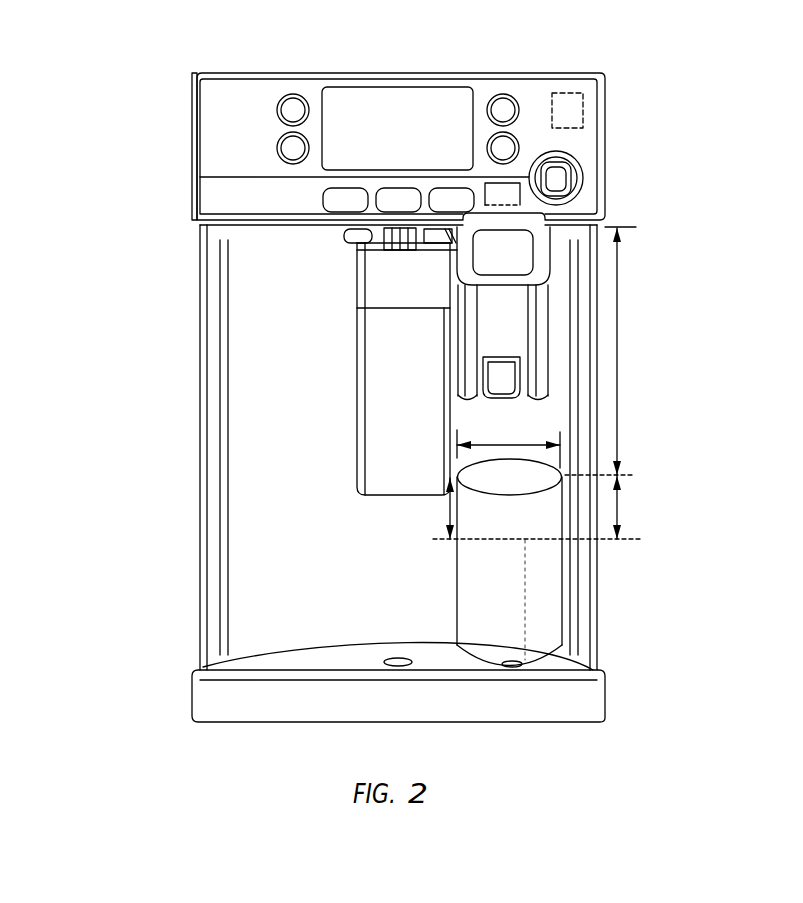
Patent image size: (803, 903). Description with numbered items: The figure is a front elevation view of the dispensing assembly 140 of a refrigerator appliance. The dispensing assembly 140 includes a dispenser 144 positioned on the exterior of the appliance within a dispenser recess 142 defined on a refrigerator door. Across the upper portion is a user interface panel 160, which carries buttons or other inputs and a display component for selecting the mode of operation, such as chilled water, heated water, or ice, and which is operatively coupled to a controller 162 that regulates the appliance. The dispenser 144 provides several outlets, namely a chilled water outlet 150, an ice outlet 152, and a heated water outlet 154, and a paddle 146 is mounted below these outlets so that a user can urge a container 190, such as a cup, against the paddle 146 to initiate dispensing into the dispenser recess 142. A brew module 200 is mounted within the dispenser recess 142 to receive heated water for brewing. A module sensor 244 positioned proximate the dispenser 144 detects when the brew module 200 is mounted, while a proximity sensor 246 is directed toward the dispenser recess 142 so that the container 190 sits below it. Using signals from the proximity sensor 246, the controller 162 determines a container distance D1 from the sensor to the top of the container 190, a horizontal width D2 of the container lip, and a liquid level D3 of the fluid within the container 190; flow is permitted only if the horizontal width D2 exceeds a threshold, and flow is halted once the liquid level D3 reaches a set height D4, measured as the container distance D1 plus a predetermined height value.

The dispensing assembly 140 is at (93, 81).
The user interface panel 160 is at (278, 106).
The controller 162 is at (584, 114).
The proximity sensor 246 is at (545, 150).
The module sensor 244 is at (572, 207).
The dispenser 144 is at (595, 422).
The dispenser recess 142 is at (606, 556).
The paddle 146 is at (387, 374).
The ice outlet 152 is at (355, 252).
The chilled water outlet 150 is at (395, 257).
The heated water outlet 154 is at (411, 258).
The brew module 200 is at (560, 342).
The container 190 is at (456, 600).
The container distance D1 is at (618, 282).
The horizontal width D2 is at (519, 444).
The liquid level D3 is at (443, 510).
The set height D4 is at (623, 505).